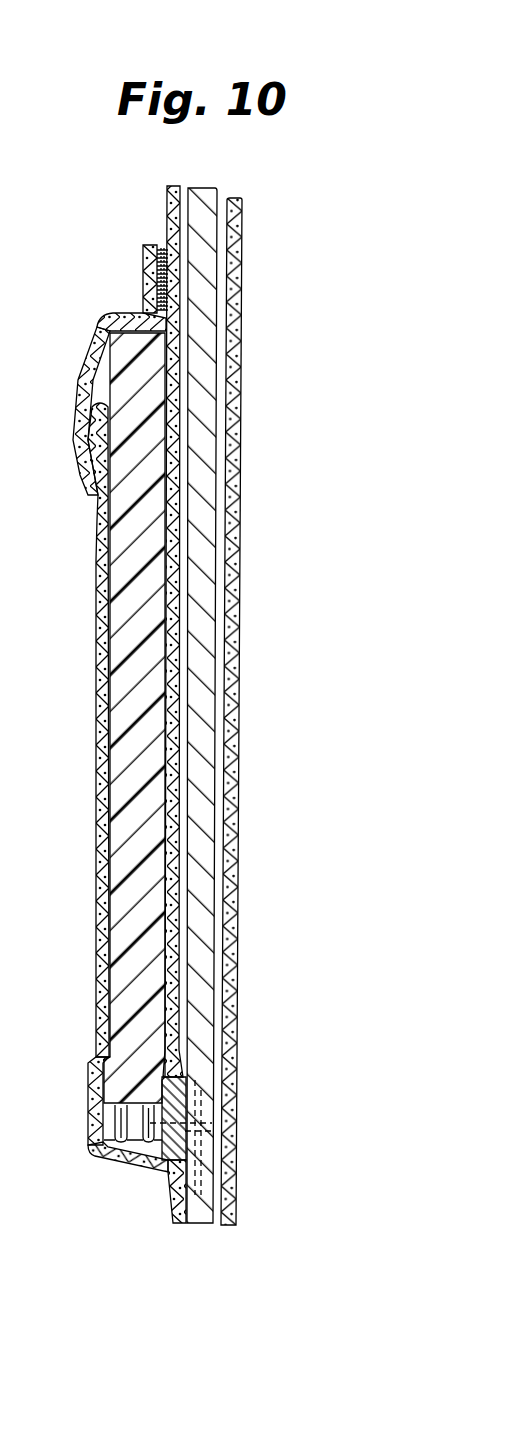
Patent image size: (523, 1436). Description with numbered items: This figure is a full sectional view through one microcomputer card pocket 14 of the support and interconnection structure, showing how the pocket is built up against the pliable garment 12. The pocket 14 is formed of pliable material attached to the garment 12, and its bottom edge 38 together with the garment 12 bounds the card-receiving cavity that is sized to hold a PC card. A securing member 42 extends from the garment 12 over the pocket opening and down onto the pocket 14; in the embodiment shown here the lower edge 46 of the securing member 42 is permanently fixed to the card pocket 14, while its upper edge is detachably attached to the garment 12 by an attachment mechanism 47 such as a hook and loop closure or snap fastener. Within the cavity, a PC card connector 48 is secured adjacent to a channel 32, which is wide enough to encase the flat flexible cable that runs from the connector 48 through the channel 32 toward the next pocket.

The pliable garment 12 is at (250, 287).
The microcomputer card pocket 14 is at (70, 688).
The channel 32 is at (210, 1112).
The bottom edge 38 is at (130, 1168).
The securing member 42 is at (98, 338).
The lower edge 46 is at (143, 262).
The attachment mechanism 47 is at (159, 247).
The PC card connector 48 is at (89, 1093).